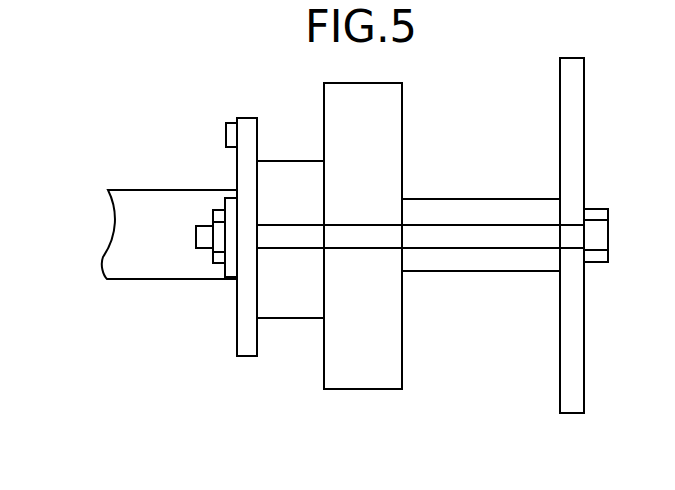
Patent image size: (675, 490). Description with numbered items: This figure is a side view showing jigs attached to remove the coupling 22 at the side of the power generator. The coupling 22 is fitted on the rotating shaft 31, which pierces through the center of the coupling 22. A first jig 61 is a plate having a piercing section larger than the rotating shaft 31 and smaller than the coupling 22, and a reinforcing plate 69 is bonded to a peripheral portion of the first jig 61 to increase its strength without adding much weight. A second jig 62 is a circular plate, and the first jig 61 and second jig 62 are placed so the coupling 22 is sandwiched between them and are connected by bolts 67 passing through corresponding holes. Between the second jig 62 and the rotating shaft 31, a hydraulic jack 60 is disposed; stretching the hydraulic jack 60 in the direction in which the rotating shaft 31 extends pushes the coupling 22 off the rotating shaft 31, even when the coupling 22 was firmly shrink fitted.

The coupling 22 is at (387, 136).
The rotating shaft 31 is at (167, 210).
The hydraulic jack 60 is at (484, 212).
The first jig 61 is at (249, 372).
The second jig 62 is at (573, 413).
The bolts 67 is at (480, 240).
The reinforcing plate 69 is at (231, 133).